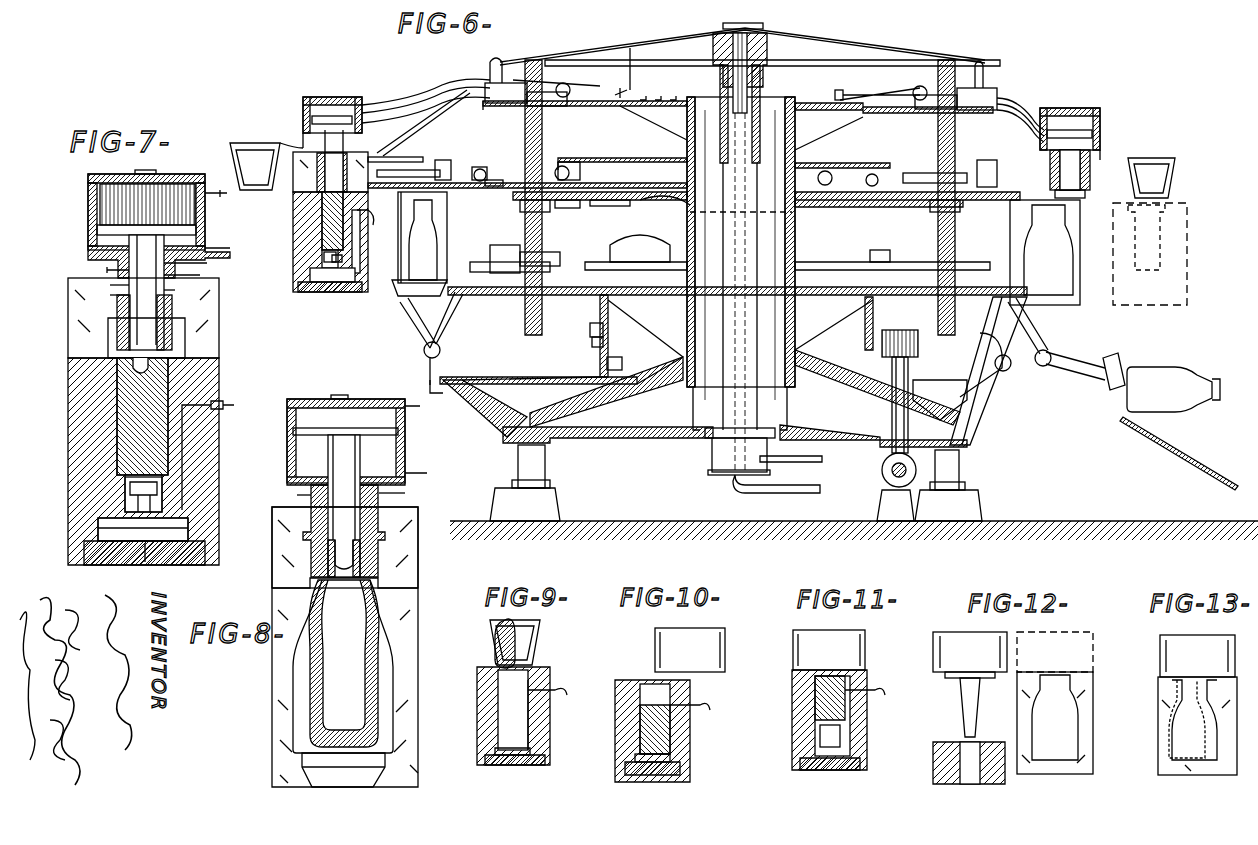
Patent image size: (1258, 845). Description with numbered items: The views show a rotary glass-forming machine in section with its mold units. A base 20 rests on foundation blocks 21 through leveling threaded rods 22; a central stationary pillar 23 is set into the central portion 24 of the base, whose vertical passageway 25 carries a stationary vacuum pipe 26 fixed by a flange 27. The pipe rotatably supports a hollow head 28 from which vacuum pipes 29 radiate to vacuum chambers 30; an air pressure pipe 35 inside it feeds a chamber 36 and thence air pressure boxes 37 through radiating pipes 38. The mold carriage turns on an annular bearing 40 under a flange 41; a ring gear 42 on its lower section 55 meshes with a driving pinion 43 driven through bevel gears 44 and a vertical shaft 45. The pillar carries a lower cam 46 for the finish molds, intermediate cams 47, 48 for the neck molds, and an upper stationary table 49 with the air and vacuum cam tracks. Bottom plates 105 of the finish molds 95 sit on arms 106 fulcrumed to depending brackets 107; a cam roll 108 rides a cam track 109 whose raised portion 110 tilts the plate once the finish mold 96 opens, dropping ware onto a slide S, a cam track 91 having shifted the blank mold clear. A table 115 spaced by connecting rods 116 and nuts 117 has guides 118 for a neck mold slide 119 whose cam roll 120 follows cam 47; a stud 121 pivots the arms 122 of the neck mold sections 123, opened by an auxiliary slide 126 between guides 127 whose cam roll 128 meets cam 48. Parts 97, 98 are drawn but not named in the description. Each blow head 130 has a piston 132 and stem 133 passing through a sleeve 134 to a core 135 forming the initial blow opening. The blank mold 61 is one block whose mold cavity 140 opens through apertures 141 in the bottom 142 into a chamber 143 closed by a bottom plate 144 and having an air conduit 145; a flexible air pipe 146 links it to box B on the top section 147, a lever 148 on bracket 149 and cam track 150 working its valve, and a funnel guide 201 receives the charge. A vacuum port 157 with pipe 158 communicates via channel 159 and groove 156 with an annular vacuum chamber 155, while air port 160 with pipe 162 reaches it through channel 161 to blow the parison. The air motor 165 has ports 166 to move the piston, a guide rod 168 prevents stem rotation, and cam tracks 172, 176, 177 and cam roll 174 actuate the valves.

In FIG. 6, the base 20 is at (648, 455).
In FIG. 6, the foundation blocks 21 is at (560, 495).
In FIG. 6, the threaded rods 22 is at (545, 463).
In FIG. 6, the central stationary pillar 23 is at (810, 228).
In FIG. 6, the central portion 24 is at (665, 385).
In FIG. 6, the vertical passageway 25 is at (700, 400).
In FIG. 6, the stationary vacuum pipe 26 is at (712, 460).
In FIG. 6, the flange 27 is at (705, 435).
In FIG. 6, the hollow head 28 is at (767, 70).
In FIG. 6, the individual vacuum pipes 29 is at (650, 62).
In FIG. 6, the vacuum chambers 30 is at (997, 95).
In FIG. 6, the air pressure pipe 35 is at (745, 153).
In FIG. 6, the chamber 36 is at (745, 22).
In FIG. 6, the air pressure boxes 37 is at (485, 85).
In FIG. 6, the radiating pipes 38 is at (610, 52).
In FIG. 6, the annular bearing 40 is at (590, 328).
In FIG. 6, the flange 41 is at (607, 363).
In FIG. 6, the ring gear 42 is at (592, 342).
In FIG. 6, the driving pinion 43 is at (918, 348).
In FIG. 6, the bevel gears 44 is at (882, 462).
In FIG. 6, the vertical shaft 45 is at (892, 408).
In FIG. 6, the lower cam 46 is at (580, 262).
In FIG. 6, the intermediate cam 47 is at (562, 166).
In FIG. 6, the neck mold cam track 48 is at (932, 170).
In FIG. 6, the upper stationary table 49 is at (687, 165).
In FIG. 6, the lower section of mold carriage 55 is at (490, 300).
In FIG. 6, the blank mold 61 is at (293, 240).
In FIG. 7, the blank mold 61 is at (68, 415).
In FIG. 9, the blank mold 61 is at (550, 710).
In FIG. 10, the blank mold 61 is at (690, 730).
In FIG. 11, the blank mold 61 is at (862, 695).
In FIG. 12, the blank mold 61 is at (933, 763).
In FIG. 6, the cam track 91 is at (668, 260).
In FIG. 6, the finish mold 95 is at (398, 256).
In FIG. 8, the finish mold 95 is at (410, 605).
In FIG. 12, the finish mold 95 is at (1093, 728).
In FIG. 13, the finish mold 95 is at (1158, 710).
In FIG. 6, the finish mold 96 is at (1080, 223).
In FIG. 6, the arm 97 is at (485, 243).
In FIG. 6, the roller 98 is at (560, 244).
In FIG. 6, the bottom plate 105 is at (393, 287).
In FIG. 8, the bottom plate 105 is at (370, 765).
In FIG. 6, the arm 106 is at (410, 330).
In FIG. 6, the depending bracket 107 is at (455, 330).
In FIG. 6, the cam roll 108 is at (1003, 371).
In FIG. 6, the continuous cam track 109 is at (445, 400).
In FIG. 6, the raised portion 110 is at (990, 338).
In FIG. 6, the table 115 is at (665, 207).
In FIG. 6, the connecting rods 116 is at (525, 230).
In FIG. 6, the spacing nuts 117 is at (520, 206).
In FIG. 6, the guides 118 is at (610, 207).
In FIG. 6, the neck mold slide 119 is at (564, 210).
In FIG. 6, the cam roll 120 is at (575, 160).
In FIG. 6, the upstanding stud 121 is at (458, 150).
In FIG. 6, the arms 122 is at (395, 155).
In FIG. 6, the neck mold sections 123 is at (293, 180).
In FIG. 7, the neck mold sections 123 is at (228, 333).
In FIG. 8, the neck mold sections 123 is at (405, 560).
In FIG. 10, the neck mold sections 123 is at (655, 650).
In FIG. 11, the neck mold sections 123 is at (855, 655).
In FIG. 12, the neck mold sections 123 is at (990, 645).
In FIG. 13, the neck mold sections 123 is at (1165, 637).
In FIG. 6, the auxiliary slide 126 is at (469, 164).
In FIG. 6, the guides 127 is at (503, 172).
In FIG. 6, the cam roll 128 is at (480, 172).
In FIG. 6, the blow head 130 is at (333, 97).
In FIG. 7, the blow head 130 is at (92, 180).
In FIG. 6, the piston 132 is at (310, 122).
In FIG. 7, the piston 132 is at (110, 232).
In FIG. 8, the piston 132 is at (300, 392).
In FIG. 6, the stem 133 is at (325, 170).
In FIG. 7, the stem 133 is at (164, 318).
In FIG. 6, the sleeve 134 is at (1090, 175).
In FIG. 7, the sleeve 134 is at (108, 328).
In FIG. 6, the core 135 is at (1085, 195).
In FIG. 8, the core 135 is at (345, 555).
In FIG. 6, the mold cavity 140 is at (322, 215).
In FIG. 7, the mold cavity 140 is at (150, 385).
In FIG. 11, the mold cavity 140 is at (828, 705).
In FIG. 7, the apertures 141 is at (135, 528).
In FIG. 10, the apertures 141 is at (650, 775).
In FIG. 7, the bottom 142 is at (150, 503).
In FIG. 11, the bottom 142 is at (822, 770).
In FIG. 6, the chamber 143 is at (320, 292).
In FIG. 7, the chamber 143 is at (100, 567).
In FIG. 9, the chamber 143 is at (500, 765).
In FIG. 6, the bottom plate 144 is at (345, 292).
In FIG. 7, the bottom plate 144 is at (150, 567).
In FIG. 9, the bottom plate 144 is at (530, 765).
In FIG. 7, the air conduit 145 is at (185, 447).
In FIG. 9, the air conduit 145 is at (530, 738).
In FIG. 6, the flexible air pipe 146 is at (378, 228).
In FIG. 7, the flexible air pipe 146 is at (228, 412).
In FIG. 9, the flexible air pipe 146 is at (555, 681).
In FIG. 10, the flexible air pipe 146 is at (696, 696).
In FIG. 11, the flexible air pipe 146 is at (872, 679).
In FIG. 6, the top section 147 is at (560, 108).
In FIG. 6, the lever 148 is at (582, 57).
In FIG. 6, the upstanding bracket 149 is at (580, 72).
In FIG. 6, the continuous cam track 150 is at (874, 84).
In FIG. 7, the vacuum chamber 155 is at (172, 340).
In FIG. 7, the groove 156 is at (117, 310).
In FIG. 7, the vacuum port 157 is at (110, 285).
In FIG. 6, the pipe 158 is at (685, 144).
In FIG. 7, the pipe 158 is at (107, 270).
In FIG. 8, the pipe 158 is at (291, 494).
In FIG. 7, the longitudinal channel 159 is at (110, 295).
In FIG. 7, the air pressure port 160 is at (200, 278).
In FIG. 7, the channel 161 is at (175, 292).
In FIG. 7, the pipe 162 is at (207, 261).
In FIG. 8, the pipe 162 is at (411, 499).
In FIG. 7, the air motor 165 is at (90, 218).
In FIG. 6, the ports 166 is at (385, 118).
In FIG. 7, the ports 166 is at (227, 219).
In FIG. 8, the ports 166 is at (405, 392).
In FIG. 7, the guide rod 168 is at (150, 208).
In FIG. 6, the continuous cam track 172 is at (687, 89).
In FIG. 6, the cam roll 174 is at (630, 82).
In FIG. 6, the inner continuous cam track 176 is at (669, 87).
In FIG. 6, the outer continuous cam track 177 is at (651, 88).
In FIG. 6, the funnel guide 201 is at (260, 143).
In FIG. 9, the funnel guide 201 is at (540, 640).
In FIG. 6, the box B is at (510, 52).
In FIG. 6, the slide S is at (1172, 460).